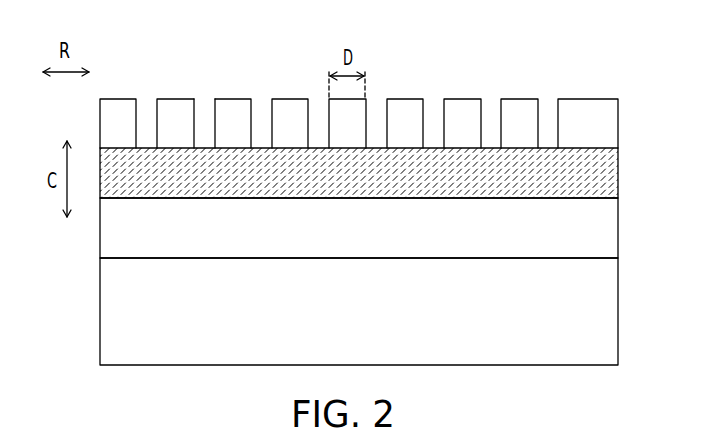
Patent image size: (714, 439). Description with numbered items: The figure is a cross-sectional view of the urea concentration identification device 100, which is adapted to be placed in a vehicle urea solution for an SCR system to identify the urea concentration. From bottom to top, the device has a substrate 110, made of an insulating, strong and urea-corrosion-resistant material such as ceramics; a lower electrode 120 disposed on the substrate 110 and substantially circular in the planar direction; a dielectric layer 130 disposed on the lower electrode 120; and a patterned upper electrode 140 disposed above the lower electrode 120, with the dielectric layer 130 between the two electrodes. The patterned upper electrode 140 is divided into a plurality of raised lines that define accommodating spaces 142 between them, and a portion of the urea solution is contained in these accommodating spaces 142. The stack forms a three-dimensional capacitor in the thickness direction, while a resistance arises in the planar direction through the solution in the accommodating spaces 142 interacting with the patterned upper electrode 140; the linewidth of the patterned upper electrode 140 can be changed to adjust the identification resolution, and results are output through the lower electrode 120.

The urea concentration identification device 100 is at (385, 182).
The substrate 110 is at (590, 307).
The lower electrode 120 is at (590, 233).
The dielectric layer 130 is at (592, 178).
The patterned upper electrode 140 is at (590, 122).
The accommodating spaces 142 is at (204, 128).